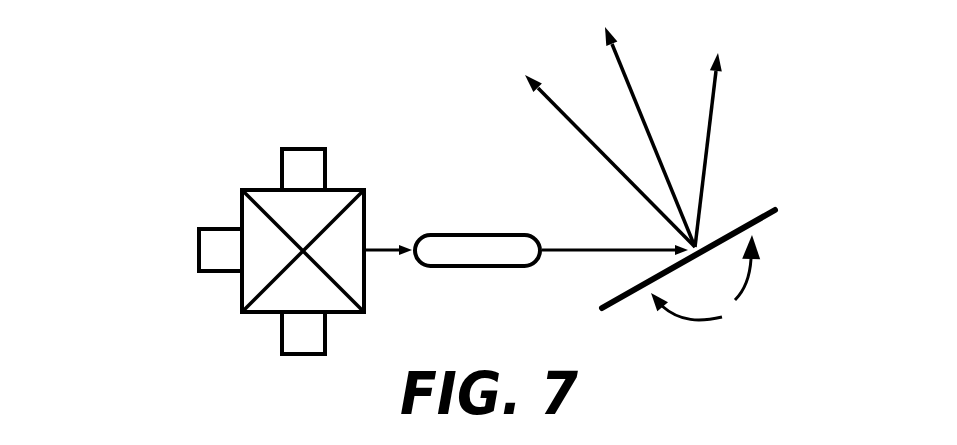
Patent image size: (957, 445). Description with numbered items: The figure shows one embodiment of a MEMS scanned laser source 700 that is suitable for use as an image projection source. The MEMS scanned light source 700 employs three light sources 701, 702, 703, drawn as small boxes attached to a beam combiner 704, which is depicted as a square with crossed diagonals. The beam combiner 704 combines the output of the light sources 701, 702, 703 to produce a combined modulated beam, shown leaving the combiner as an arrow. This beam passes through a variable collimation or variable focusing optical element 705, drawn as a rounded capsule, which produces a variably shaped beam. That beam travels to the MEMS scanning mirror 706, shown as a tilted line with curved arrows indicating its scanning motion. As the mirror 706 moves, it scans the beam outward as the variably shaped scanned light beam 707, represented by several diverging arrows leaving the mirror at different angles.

The MEMS scanned laser source 700 is at (120, 202).
The light source 701 is at (303, 168).
The light source 702 is at (212, 253).
The light source 703 is at (302, 332).
The beam combiner 704 is at (368, 221).
The variable collimation or variable focusing optical element 705 is at (452, 248).
The MEMS scanning mirror 706 is at (730, 232).
The variably shaped scanned light beam 707 is at (713, 113).